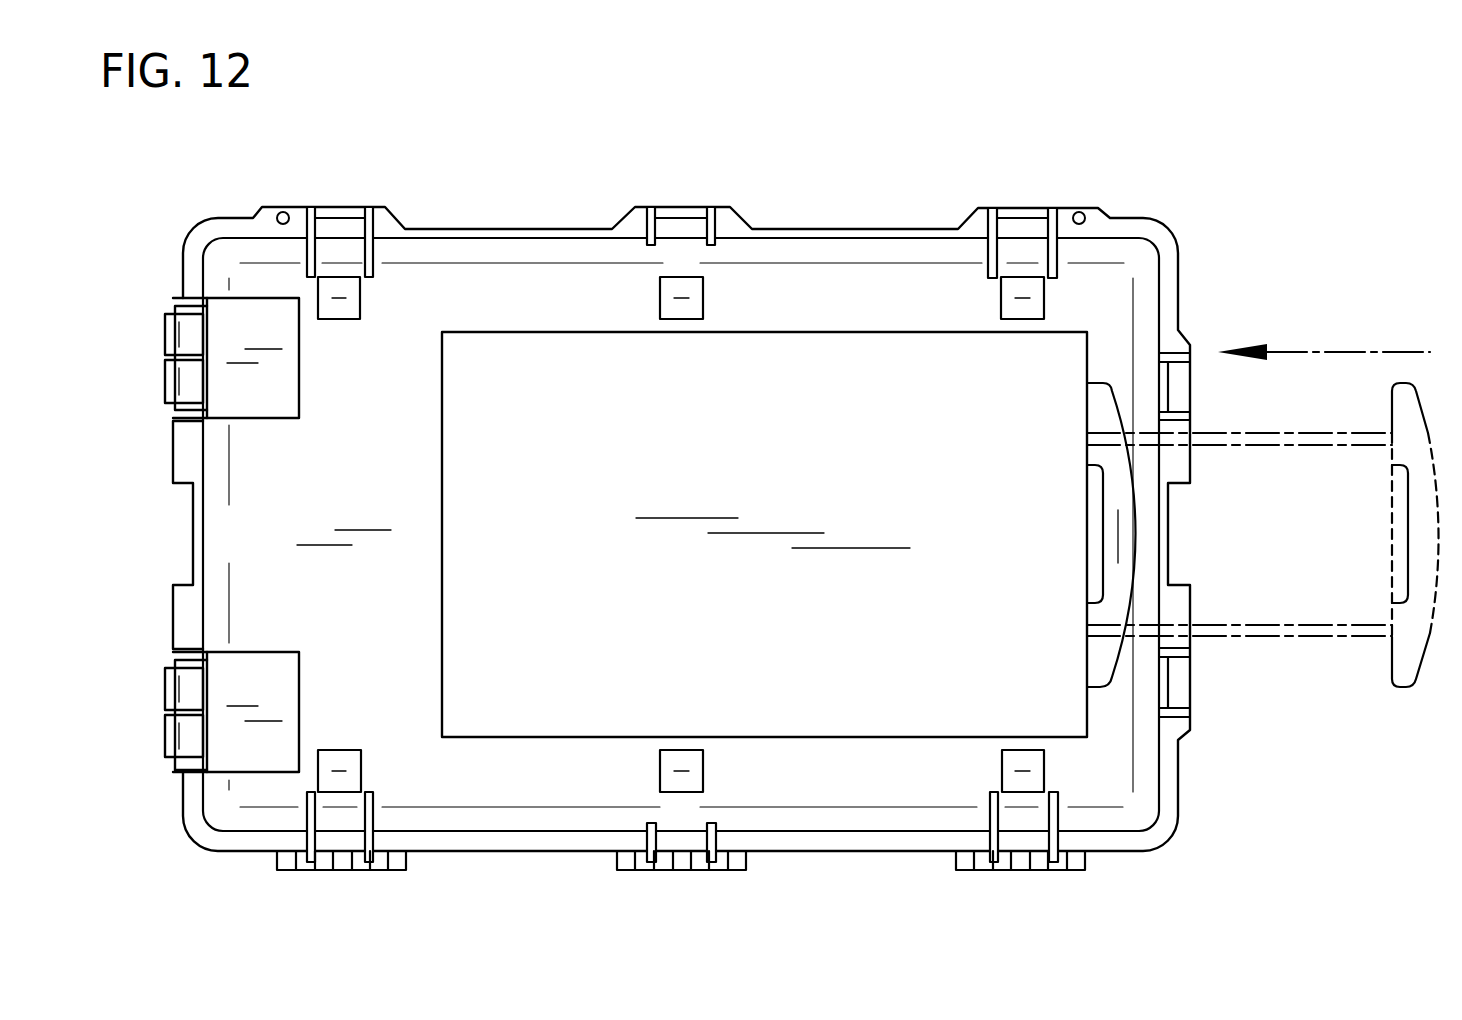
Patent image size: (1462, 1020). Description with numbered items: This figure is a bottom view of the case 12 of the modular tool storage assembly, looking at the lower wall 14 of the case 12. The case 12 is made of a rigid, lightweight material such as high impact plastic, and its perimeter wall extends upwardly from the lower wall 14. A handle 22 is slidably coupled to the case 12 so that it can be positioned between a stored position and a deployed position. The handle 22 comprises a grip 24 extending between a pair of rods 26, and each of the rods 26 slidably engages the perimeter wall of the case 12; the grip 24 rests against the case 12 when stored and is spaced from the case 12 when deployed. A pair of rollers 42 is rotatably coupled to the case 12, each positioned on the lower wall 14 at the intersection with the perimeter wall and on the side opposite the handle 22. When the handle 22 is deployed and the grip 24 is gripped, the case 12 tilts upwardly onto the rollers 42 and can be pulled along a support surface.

The case 12 is at (898, 227).
The lower wall 14 is at (542, 315).
The handle 22 is at (1108, 367).
The grip 24 is at (1392, 522).
The rods 26 is at (1328, 433).
The rollers 42 is at (170, 345).